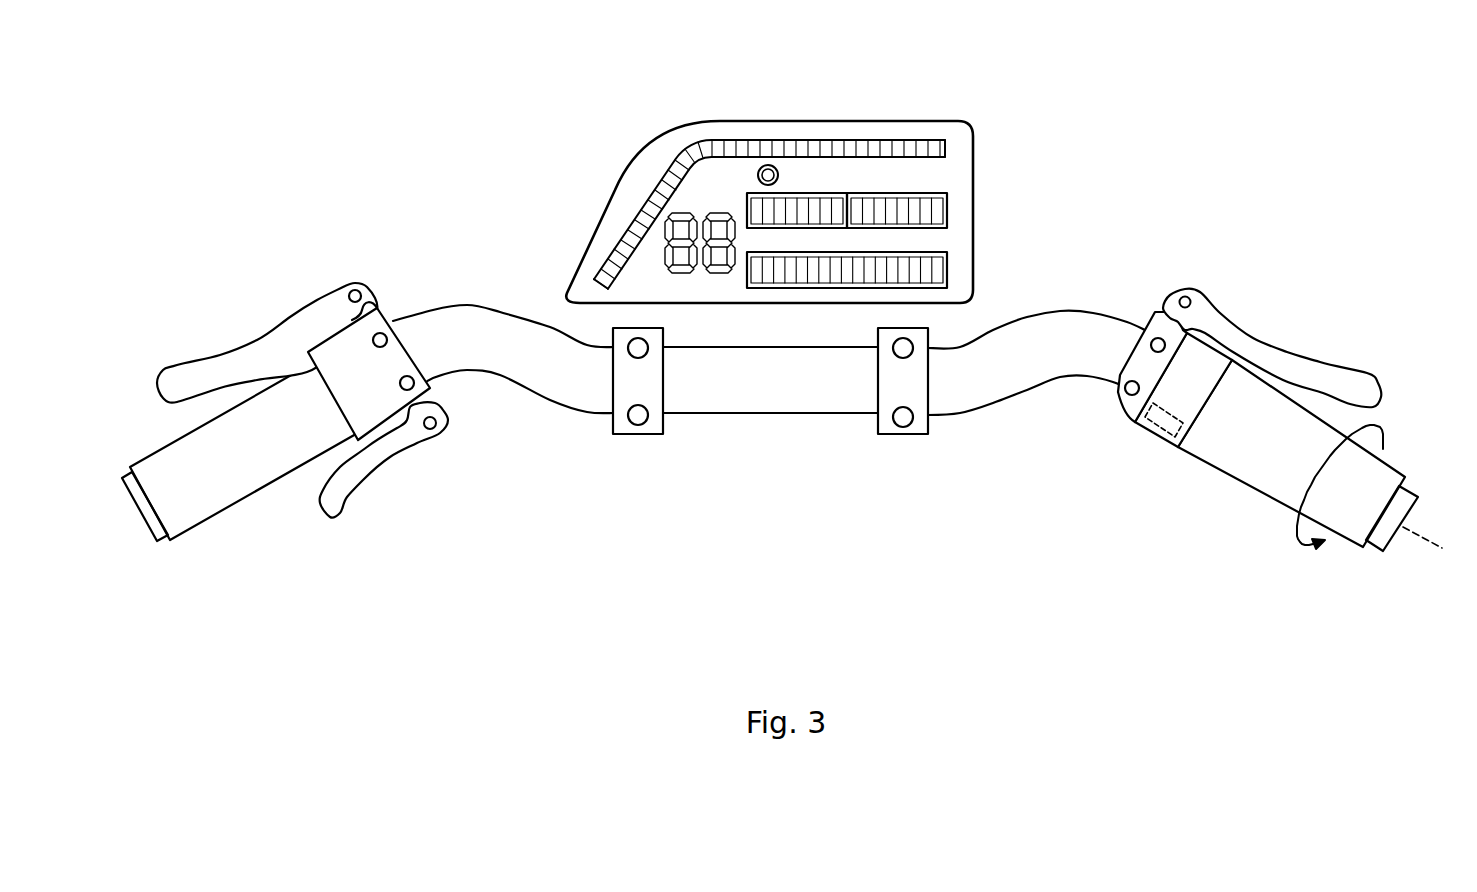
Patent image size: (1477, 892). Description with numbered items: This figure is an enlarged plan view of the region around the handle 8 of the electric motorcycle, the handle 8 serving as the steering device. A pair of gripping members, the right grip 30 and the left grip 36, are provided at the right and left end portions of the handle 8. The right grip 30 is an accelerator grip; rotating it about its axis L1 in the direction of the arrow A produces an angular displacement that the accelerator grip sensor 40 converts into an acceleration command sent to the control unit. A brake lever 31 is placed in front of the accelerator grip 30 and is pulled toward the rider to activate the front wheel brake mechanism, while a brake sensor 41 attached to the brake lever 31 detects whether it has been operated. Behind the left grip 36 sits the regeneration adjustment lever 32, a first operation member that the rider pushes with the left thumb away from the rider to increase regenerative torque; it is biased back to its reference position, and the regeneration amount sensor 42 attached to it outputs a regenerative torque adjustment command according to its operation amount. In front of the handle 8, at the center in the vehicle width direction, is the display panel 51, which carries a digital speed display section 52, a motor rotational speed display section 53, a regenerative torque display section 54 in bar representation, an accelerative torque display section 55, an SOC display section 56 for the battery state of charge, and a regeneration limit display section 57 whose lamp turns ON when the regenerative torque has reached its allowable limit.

The handle 8 is at (807, 417).
The right grip 30 is at (1290, 505).
The brake lever 31 is at (1270, 348).
The regeneration adjustment lever 32 is at (382, 467).
The left grip 36 is at (248, 500).
The accelerator grip sensor 40 is at (1162, 432).
The brake sensor 41 is at (1185, 296).
The regeneration amount sensor 42 is at (431, 429).
The display panel 51 is at (866, 121).
The speed display section 52 is at (698, 213).
The motor rotational speed display section 53 is at (710, 137).
The regenerative torque display section 54 is at (827, 193).
The accelerative torque display section 55 is at (880, 197).
The SOC display section 56 is at (893, 250).
The regeneration limit display section 57 is at (768, 165).
The grip rotation direction arrow A is at (1380, 452).
The grip axis line L1 is at (1430, 537).